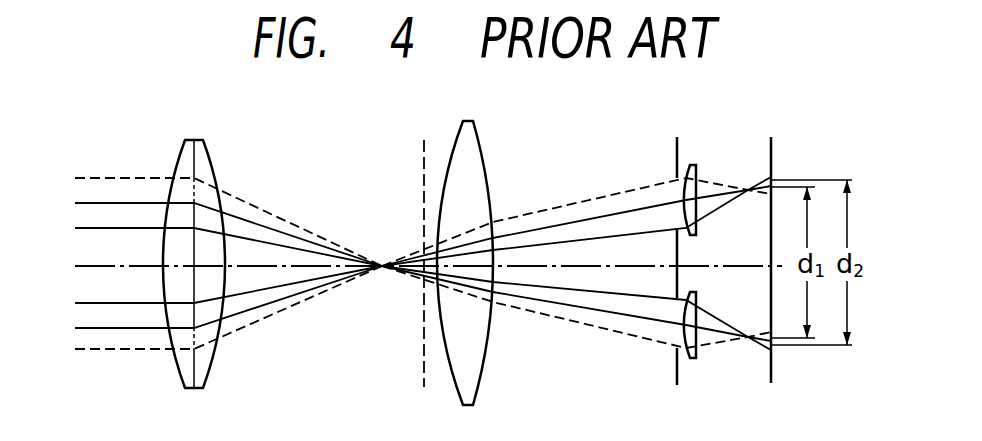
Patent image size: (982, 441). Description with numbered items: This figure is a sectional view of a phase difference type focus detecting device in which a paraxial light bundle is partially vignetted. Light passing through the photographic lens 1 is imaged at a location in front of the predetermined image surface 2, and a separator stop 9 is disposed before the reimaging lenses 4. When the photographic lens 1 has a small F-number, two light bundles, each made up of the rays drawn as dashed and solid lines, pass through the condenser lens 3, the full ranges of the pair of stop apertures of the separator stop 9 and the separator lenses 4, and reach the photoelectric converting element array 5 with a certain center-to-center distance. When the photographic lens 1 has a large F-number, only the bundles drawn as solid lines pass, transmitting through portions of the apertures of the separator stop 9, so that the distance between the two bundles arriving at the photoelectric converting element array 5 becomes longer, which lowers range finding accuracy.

The photographic lens 1 is at (203, 140).
The predetermined image surface 2 is at (424, 143).
The condenser lens 3 is at (478, 137).
The separator stop 9 is at (677, 140).
The reimaging lenses 4 is at (693, 165).
The photoelectric converting element array 5 is at (774, 137).